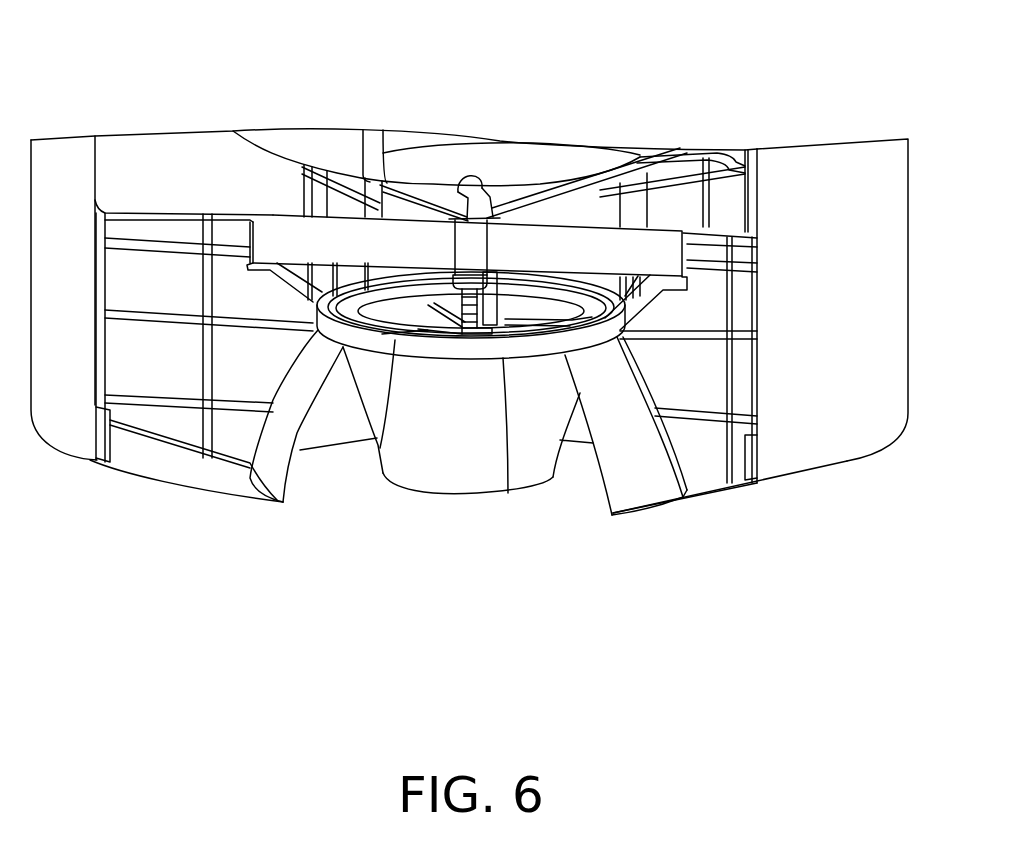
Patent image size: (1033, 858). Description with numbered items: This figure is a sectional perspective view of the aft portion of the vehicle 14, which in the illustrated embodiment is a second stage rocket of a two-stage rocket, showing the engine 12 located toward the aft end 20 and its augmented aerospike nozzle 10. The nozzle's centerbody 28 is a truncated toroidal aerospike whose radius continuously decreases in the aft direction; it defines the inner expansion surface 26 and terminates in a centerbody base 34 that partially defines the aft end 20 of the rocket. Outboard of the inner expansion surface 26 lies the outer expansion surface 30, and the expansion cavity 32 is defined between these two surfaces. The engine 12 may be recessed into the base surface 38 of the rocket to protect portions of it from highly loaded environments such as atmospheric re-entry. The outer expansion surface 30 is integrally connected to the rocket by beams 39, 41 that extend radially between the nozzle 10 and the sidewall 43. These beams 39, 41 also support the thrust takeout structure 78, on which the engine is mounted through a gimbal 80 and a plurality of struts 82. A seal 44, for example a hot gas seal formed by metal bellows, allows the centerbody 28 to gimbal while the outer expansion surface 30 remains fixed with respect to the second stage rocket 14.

The augmented aerospike nozzle 10 is at (420, 585).
The engine 12 is at (385, 665).
The vehicle 14 is at (112, 110).
The aft end 20 is at (841, 466).
The inner expansion surface 26 is at (391, 462).
The centerbody 28 is at (415, 487).
The outer expansion surface 30 is at (307, 450).
The expansion cavity 32 is at (592, 490).
The centerbody base 34 is at (423, 480).
The base surface 38 is at (765, 487).
The beam 39 is at (167, 423).
The beam 41 is at (705, 457).
The sidewall 43 is at (910, 274).
The seal 44 is at (508, 493).
The thrust takeout structure 78 is at (511, 180).
The gimbal 80 is at (454, 278).
The struts 82 is at (412, 329).